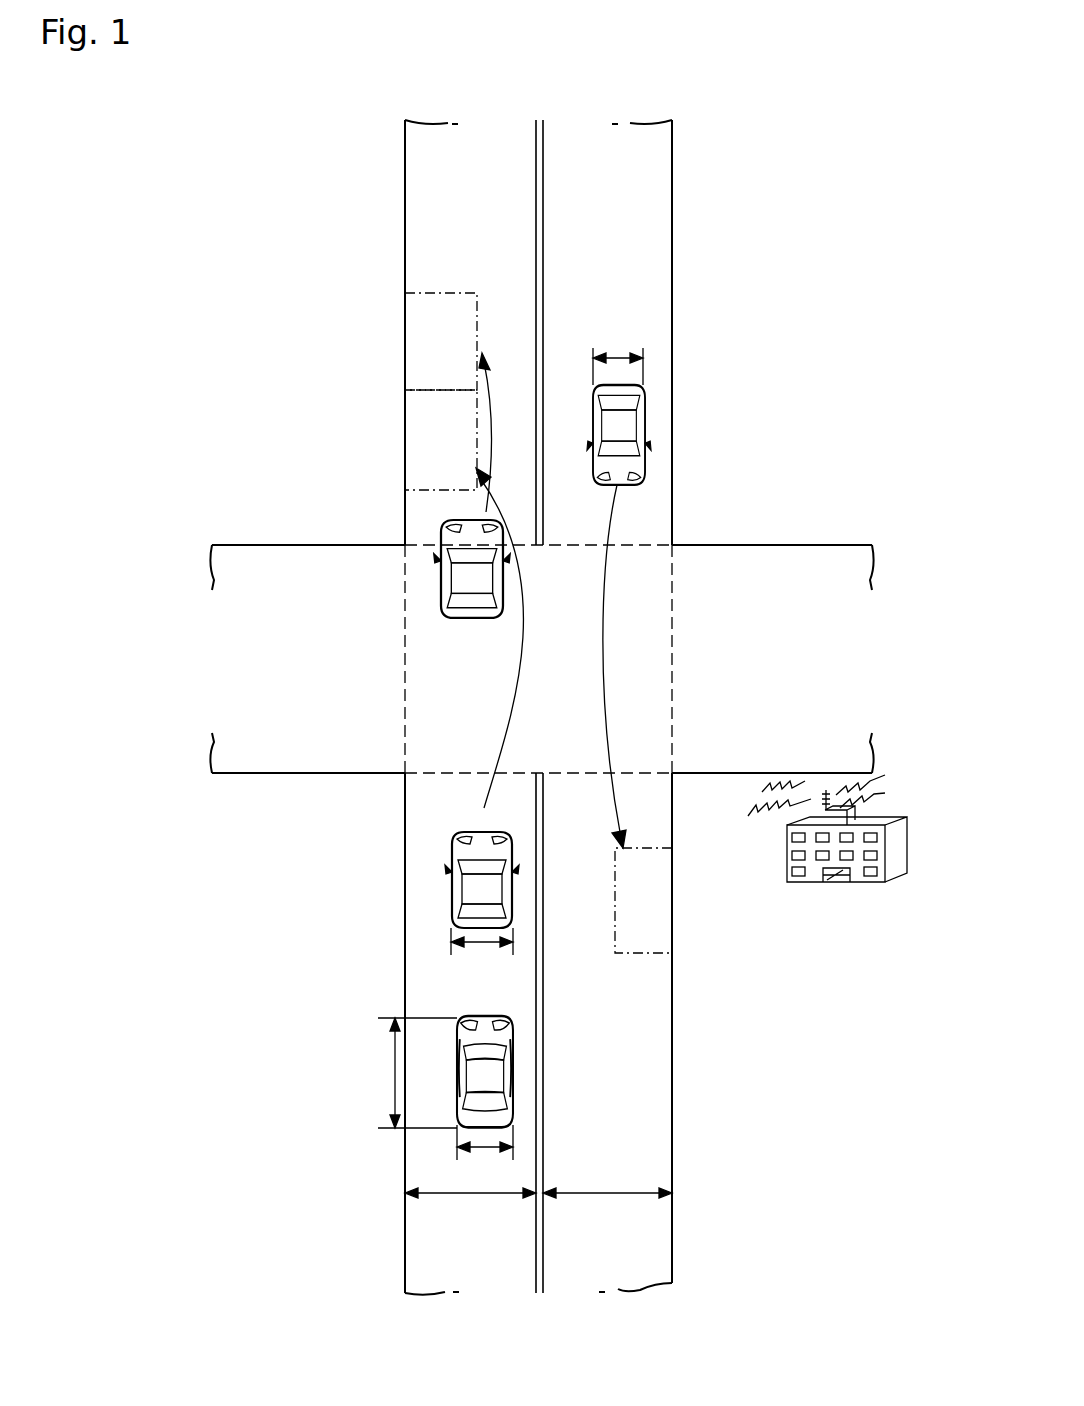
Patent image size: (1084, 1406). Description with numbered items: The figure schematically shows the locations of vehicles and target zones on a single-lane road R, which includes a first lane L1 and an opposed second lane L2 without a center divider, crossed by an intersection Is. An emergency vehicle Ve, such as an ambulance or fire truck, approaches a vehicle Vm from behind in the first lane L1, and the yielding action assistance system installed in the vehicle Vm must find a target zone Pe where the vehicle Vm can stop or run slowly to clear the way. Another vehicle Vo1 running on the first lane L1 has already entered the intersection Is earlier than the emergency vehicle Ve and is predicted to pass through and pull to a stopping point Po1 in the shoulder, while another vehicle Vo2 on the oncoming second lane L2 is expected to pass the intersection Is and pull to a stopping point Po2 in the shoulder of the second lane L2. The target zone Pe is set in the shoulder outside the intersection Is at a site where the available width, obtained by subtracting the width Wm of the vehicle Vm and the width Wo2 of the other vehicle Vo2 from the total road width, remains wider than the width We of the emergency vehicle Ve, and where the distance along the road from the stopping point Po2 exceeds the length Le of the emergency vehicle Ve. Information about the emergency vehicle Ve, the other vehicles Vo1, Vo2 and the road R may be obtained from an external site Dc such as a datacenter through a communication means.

The road R is at (672, 305).
The first lane L1 is at (430, 1272).
The second lane L2 is at (648, 1270).
The intersection Is is at (647, 582).
The stopping point Po1 is at (432, 337).
The target zone Pe is at (425, 435).
The stopping point Po2 is at (655, 905).
The other vehicle Vo1 is at (441, 533).
The other vehicle Vo2 is at (645, 418).
The width of the other vehicle Wo2 is at (618, 354).
The vehicle Vm is at (440, 885).
The width of the vehicle Wm is at (482, 950).
The emergency vehicle Ve is at (484, 1016).
The length of the emergency vehicle Le is at (409, 1073).
The width of the emergency vehicle We is at (485, 1151).
The external site Dc is at (910, 836).